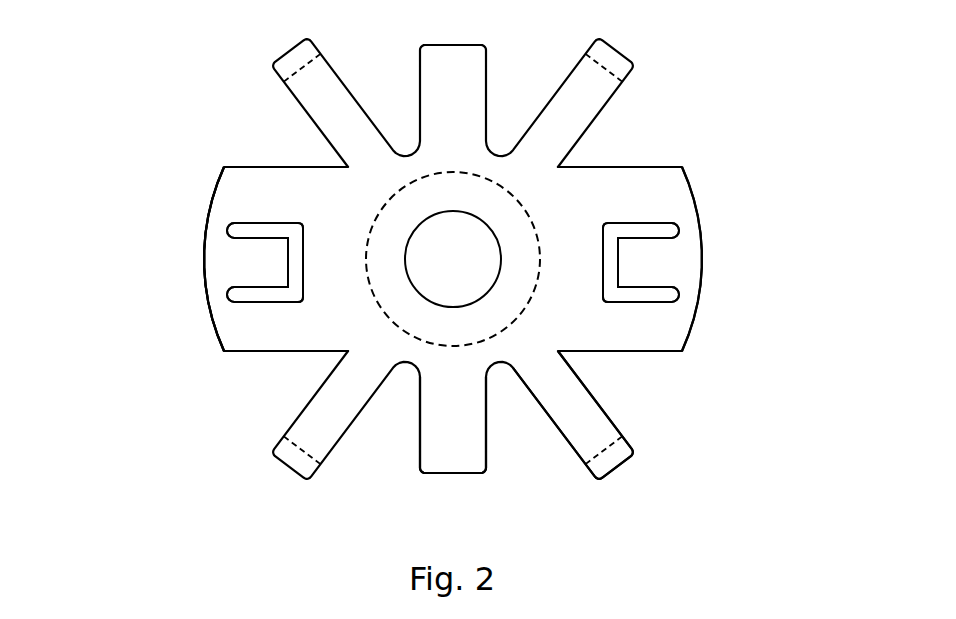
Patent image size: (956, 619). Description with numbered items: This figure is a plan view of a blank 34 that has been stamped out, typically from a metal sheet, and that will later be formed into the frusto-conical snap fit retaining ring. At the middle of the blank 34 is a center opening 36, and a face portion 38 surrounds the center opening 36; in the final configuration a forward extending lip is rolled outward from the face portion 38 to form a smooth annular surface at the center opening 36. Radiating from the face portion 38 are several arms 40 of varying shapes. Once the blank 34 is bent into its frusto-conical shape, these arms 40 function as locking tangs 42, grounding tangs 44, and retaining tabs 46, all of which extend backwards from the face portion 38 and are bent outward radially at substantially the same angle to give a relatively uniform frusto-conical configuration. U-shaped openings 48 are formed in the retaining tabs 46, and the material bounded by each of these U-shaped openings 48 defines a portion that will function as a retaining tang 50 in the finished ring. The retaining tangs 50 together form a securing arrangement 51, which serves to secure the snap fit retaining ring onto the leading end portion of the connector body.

The blank 34 is at (637, 105).
The center opening 36 is at (439, 269).
The face portion 38 is at (439, 203).
The arms 40 is at (703, 352).
The locking tangs 42 is at (444, 449).
The grounding tangs 44 is at (574, 437).
The retaining tabs 46 is at (241, 204).
The U-shaped openings 48 is at (233, 293).
The retaining tangs 50 is at (247, 270).
The securing arrangement 51 is at (180, 255).